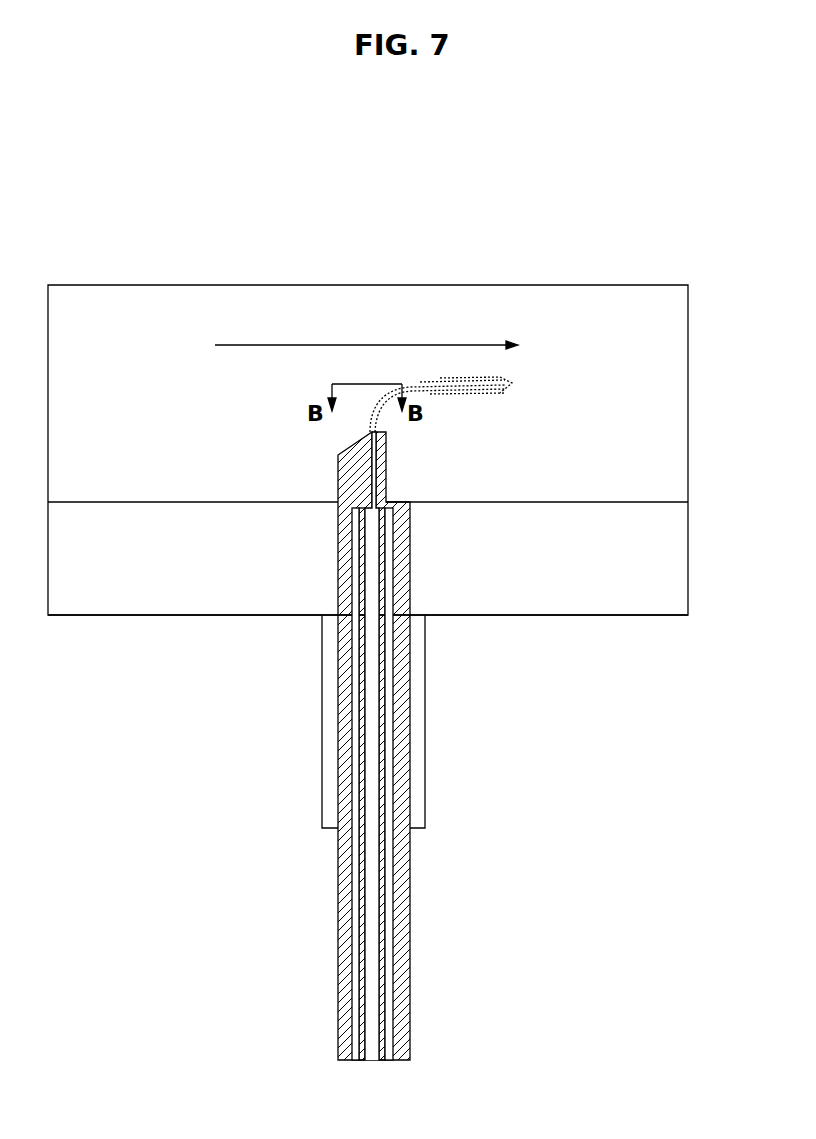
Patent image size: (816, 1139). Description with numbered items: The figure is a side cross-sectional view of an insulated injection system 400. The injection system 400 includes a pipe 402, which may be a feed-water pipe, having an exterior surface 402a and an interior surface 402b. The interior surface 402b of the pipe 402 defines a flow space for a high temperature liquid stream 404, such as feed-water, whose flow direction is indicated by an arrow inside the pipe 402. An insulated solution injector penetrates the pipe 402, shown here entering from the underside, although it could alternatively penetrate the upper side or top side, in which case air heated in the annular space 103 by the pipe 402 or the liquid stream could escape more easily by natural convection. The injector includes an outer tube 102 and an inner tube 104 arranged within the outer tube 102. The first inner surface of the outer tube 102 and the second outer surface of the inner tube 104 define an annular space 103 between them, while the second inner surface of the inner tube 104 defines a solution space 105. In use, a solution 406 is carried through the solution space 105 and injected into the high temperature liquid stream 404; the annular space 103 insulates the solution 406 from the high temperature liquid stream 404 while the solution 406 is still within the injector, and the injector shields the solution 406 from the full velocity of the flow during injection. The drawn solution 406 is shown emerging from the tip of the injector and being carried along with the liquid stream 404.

The injection system 400 is at (391, 240).
The pipe 402 is at (660, 542).
The exterior surface 402a is at (592, 617).
The interior surface 402b is at (648, 502).
The high temperature liquid stream 404 is at (366, 332).
The solution 406 is at (522, 384).
The outer tube 102 is at (342, 851).
The annular space 103 is at (353, 873).
The inner tube 104 is at (361, 912).
The solution space 105 is at (375, 963).